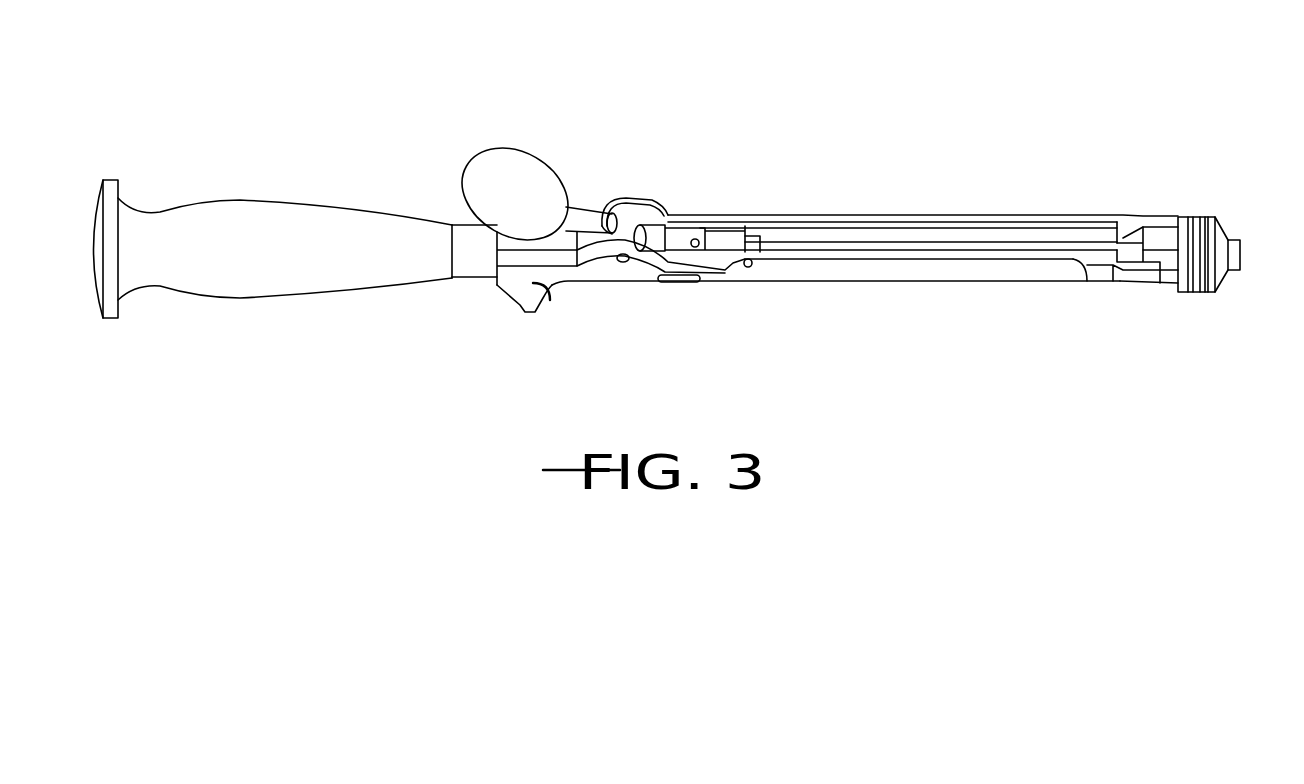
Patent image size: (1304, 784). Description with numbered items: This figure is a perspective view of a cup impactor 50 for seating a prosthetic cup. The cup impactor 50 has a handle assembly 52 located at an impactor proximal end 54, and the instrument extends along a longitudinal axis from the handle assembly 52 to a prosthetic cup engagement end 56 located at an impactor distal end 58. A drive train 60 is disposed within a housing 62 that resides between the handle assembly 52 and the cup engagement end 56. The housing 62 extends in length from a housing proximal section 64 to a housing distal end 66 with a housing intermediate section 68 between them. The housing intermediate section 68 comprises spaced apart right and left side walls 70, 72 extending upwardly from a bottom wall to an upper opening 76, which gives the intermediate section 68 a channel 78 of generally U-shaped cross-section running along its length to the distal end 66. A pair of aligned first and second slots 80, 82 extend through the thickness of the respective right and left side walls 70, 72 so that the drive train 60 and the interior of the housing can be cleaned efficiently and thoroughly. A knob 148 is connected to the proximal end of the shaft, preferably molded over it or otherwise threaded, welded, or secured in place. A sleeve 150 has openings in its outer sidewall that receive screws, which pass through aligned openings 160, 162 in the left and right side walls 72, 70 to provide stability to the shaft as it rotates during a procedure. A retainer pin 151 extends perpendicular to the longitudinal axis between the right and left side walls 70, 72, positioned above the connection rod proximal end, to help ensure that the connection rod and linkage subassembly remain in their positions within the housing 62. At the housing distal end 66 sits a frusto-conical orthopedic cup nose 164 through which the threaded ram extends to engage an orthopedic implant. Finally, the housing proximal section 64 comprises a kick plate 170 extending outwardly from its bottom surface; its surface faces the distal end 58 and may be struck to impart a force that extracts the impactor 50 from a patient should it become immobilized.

The cup impactor 50 is at (488, 92).
The handle assembly 52 is at (268, 238).
The impactor proximal end 54 is at (95, 268).
The prosthetic cup engagement end 56 is at (1223, 233).
The impactor distal end 58 is at (1243, 253).
The drive train 60 is at (697, 220).
The housing 62 is at (990, 277).
The housing proximal section 64 is at (527, 255).
The housing distal end 66 is at (1182, 262).
The housing intermediate section 68 is at (863, 277).
The right side wall 70 is at (1070, 266).
The left side wall 72 is at (1075, 220).
The upper opening 76 is at (1020, 237).
The channel 78 is at (1107, 235).
The first slot 80 is at (685, 283).
The second slot 82 is at (677, 213).
The knob 148 is at (532, 178).
The sleeve 150 is at (640, 250).
The retainer pin 151 is at (757, 233).
The opening 160 is at (613, 265).
The opening 162 is at (633, 200).
The orthopedic cup nose 164 is at (1210, 288).
The kick plate 170 is at (550, 300).